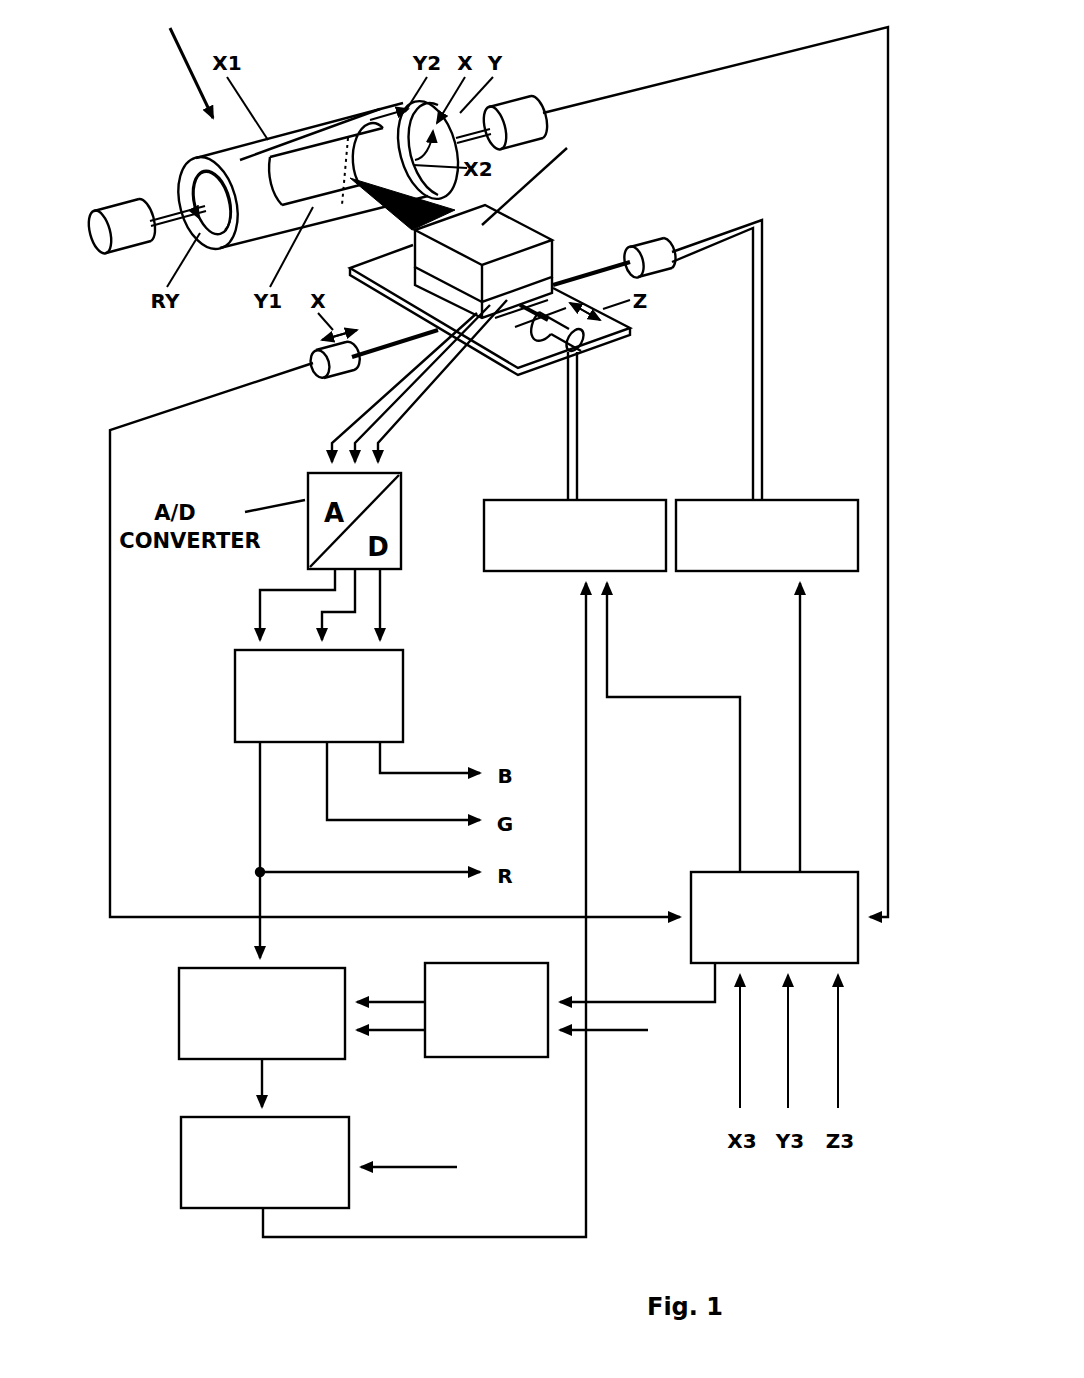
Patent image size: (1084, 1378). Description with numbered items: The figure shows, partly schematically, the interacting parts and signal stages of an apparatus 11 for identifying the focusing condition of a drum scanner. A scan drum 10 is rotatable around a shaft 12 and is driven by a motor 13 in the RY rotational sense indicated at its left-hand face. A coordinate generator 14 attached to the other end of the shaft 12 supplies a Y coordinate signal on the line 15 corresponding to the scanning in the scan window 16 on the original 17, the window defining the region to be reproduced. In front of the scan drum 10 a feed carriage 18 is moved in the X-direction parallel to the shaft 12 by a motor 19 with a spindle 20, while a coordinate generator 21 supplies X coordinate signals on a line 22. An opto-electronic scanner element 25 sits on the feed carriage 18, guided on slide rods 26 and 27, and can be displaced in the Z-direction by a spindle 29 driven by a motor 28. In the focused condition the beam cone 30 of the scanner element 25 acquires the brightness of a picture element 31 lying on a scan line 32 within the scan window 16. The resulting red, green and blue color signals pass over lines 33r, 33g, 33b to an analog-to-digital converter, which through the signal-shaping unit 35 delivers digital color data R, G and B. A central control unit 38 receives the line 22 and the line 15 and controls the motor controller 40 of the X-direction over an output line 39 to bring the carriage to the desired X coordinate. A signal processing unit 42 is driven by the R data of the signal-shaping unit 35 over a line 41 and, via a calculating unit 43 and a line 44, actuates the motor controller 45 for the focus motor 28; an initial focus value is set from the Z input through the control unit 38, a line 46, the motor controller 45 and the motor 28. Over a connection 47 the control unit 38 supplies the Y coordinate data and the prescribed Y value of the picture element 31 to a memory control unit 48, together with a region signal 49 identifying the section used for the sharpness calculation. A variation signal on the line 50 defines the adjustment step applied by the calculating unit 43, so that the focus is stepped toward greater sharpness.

The scan drum 10 is at (197, 167).
The apparatus for identifying the focusing condition 11 is at (189, 64).
The shaft 12 is at (167, 208).
The motor 13 is at (128, 228).
The coordinate generator 14 is at (523, 117).
The line 15 is at (685, 75).
The scan window 16 is at (318, 130).
The original 17 is at (345, 148).
The feed carriage 18 is at (597, 332).
The motor 19 is at (657, 250).
The spindle 20 is at (597, 270).
The coordinate generator 21 is at (340, 362).
The line 22 is at (112, 627).
The opto-electronic scanner element 25 is at (519, 252).
The slide rod 26 is at (553, 285).
The slide rod 27 is at (522, 328).
The motor 28 is at (570, 353).
The spindle 29 is at (533, 325).
The beam cone 30 is at (443, 223).
The picture element 31 is at (352, 167).
The scan line 32 is at (348, 135).
The line 33b is at (398, 418).
The line 33g is at (443, 410).
The line 33r is at (487, 405).
The signal-shaping unit 35 is at (403, 677).
The central control unit 38 is at (837, 870).
The output line 39 is at (800, 742).
The motor controller 40 is at (717, 563).
The line 41 is at (268, 950).
The signal processing unit 42 is at (333, 1048).
The calculating unit 43 is at (337, 1130).
The line 44 is at (588, 1122).
The motor controller 45 is at (495, 563).
The line 46 is at (688, 697).
The connection 47 is at (610, 1032).
The memory control unit 48 is at (537, 1058).
The region signal 49 is at (655, 1005).
The line 50 is at (417, 1163).